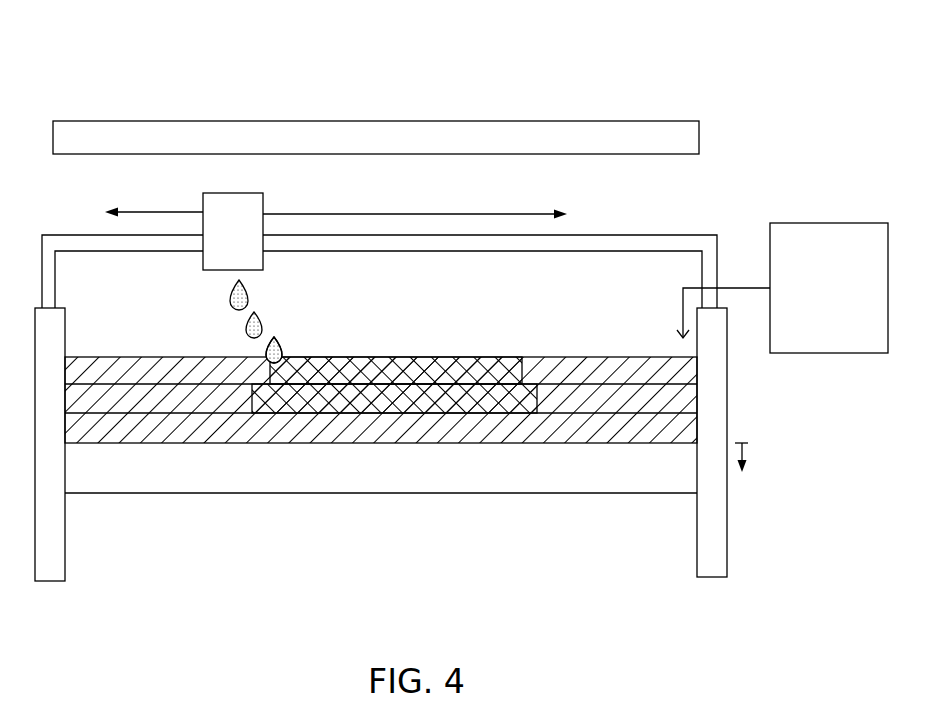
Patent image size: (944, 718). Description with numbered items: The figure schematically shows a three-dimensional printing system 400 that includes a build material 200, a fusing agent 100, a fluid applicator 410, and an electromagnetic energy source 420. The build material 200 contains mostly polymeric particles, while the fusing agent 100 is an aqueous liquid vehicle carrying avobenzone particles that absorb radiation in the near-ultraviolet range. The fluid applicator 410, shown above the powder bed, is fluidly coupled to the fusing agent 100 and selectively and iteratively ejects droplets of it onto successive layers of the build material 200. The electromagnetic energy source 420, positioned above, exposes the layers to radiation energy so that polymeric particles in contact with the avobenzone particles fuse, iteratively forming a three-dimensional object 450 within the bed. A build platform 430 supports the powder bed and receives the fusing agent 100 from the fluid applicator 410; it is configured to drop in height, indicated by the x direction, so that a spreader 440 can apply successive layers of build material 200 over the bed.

The three-dimensional printing system 400 is at (163, 57).
The electromagnetic energy source 420 is at (398, 150).
The fluid applicator 410 is at (255, 245).
The spreader 440 is at (850, 300).
The build platform 430 is at (191, 468).
The build material 200 is at (381, 460).
The three-dimensional object 450 is at (408, 368).
The fusing agent 100 is at (228, 298).